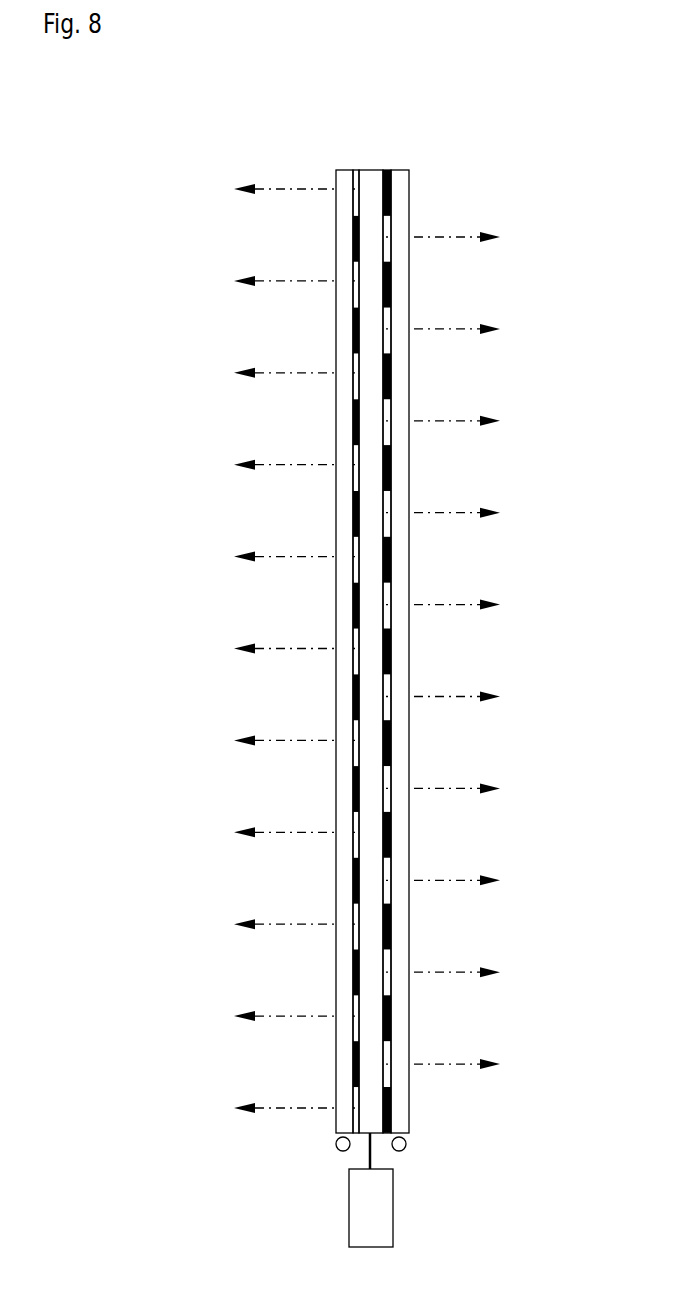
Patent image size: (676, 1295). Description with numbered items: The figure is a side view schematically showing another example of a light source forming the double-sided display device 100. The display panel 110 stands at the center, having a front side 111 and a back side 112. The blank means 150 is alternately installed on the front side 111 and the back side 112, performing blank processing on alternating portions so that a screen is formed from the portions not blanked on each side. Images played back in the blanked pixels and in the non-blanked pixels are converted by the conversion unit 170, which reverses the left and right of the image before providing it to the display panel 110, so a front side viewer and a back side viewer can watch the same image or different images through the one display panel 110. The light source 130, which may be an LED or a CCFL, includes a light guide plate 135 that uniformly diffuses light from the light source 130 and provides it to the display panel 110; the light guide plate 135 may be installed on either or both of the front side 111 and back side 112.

The double-sided display device 100 is at (146, 175).
The display panel 110 is at (371, 178).
The front side 111 is at (353, 732).
The back side 112 is at (383, 594).
The light source 130 is at (337, 1147).
The light guide plate 135 is at (342, 173).
The blank means 150 is at (383, 381).
The conversion unit 170 is at (393, 1207).